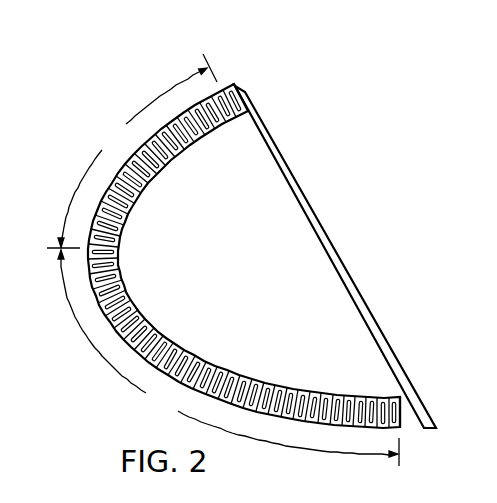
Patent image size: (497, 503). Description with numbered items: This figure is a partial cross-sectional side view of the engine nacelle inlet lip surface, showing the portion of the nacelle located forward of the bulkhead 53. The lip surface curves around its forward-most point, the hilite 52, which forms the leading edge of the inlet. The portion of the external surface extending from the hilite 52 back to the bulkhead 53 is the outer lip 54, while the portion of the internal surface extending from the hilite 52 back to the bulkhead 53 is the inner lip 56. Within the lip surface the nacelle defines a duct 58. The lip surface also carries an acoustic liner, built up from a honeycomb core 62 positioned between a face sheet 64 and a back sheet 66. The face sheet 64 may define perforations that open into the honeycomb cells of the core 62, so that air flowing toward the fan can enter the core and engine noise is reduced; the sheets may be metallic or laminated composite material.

The hilite 52 is at (58, 245).
The bulkhead 53 is at (352, 290).
The outer lip 54 is at (137, 151).
The inner lip 56 is at (228, 358).
The duct 58 is at (225, 193).
The honeycomb core 62 is at (400, 418).
The face sheet 64 is at (290, 418).
The back sheet 66 is at (318, 392).